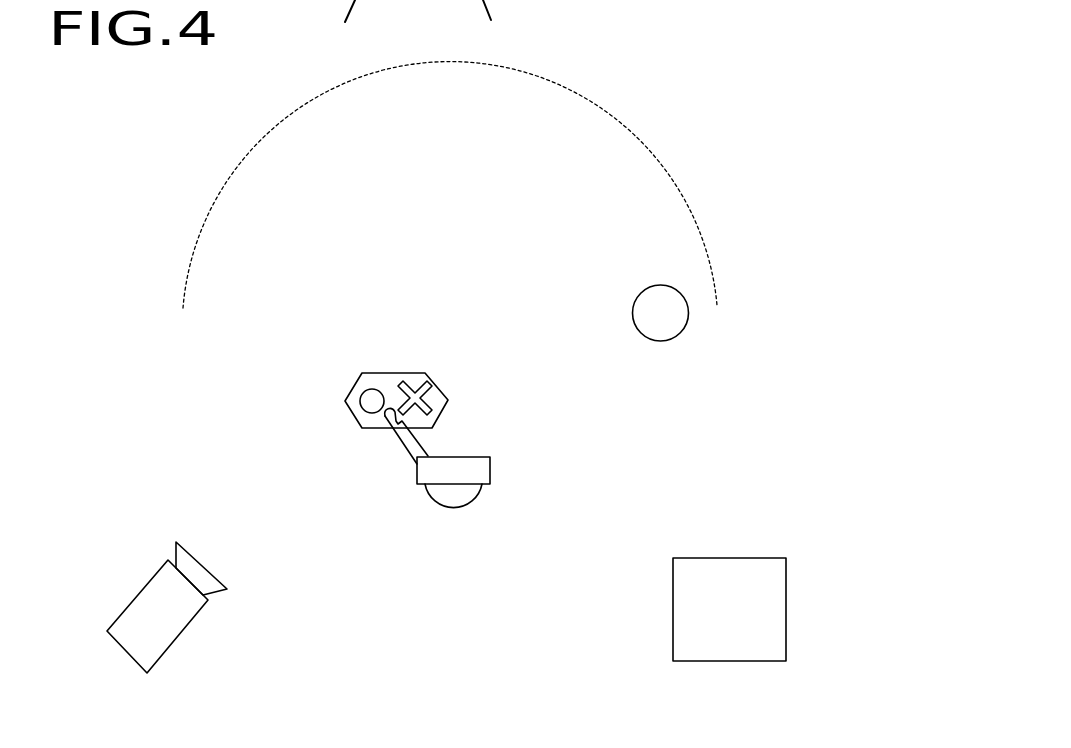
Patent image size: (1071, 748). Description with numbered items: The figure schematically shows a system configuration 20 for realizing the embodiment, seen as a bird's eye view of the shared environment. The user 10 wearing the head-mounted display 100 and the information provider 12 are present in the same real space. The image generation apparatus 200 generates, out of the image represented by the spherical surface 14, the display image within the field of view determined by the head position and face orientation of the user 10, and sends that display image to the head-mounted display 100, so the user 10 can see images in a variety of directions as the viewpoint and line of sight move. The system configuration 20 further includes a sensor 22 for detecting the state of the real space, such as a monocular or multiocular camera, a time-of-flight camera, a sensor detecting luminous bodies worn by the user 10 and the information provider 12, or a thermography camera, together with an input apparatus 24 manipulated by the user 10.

The system configuration 20 is at (157, 133).
The spherical surface 14 is at (642, 152).
The information provider 12 is at (678, 335).
The input apparatus 24 is at (345, 401).
The head-mounted display 100 is at (490, 463).
The user 10 is at (480, 505).
The sensor 22 is at (193, 613).
The image generation apparatus 200 is at (787, 610).